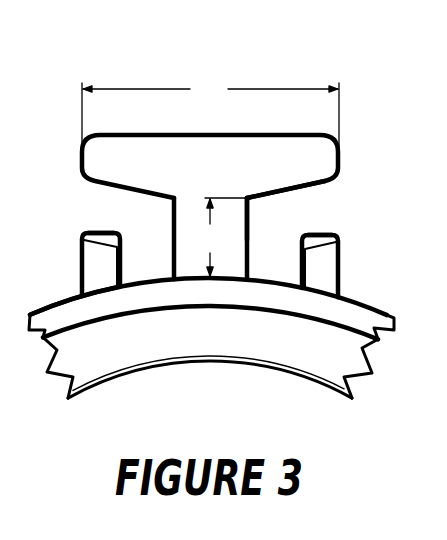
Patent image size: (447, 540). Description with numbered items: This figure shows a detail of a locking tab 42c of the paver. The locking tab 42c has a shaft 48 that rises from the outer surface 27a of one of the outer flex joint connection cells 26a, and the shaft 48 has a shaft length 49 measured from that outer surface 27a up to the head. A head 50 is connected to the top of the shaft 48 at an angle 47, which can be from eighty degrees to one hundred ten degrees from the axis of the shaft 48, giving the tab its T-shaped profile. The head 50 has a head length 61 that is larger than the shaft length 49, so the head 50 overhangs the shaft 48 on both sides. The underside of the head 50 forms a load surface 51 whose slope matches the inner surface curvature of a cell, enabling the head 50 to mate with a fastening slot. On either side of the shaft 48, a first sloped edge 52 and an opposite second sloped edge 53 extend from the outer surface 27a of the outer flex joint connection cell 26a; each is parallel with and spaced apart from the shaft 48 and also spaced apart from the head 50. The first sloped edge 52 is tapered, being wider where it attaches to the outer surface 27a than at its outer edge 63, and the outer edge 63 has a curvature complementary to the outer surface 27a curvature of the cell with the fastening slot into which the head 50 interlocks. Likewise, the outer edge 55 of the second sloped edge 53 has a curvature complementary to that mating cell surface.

The locking tab 42c is at (192, 140).
The head length 61 is at (210, 113).
The head 50 is at (259, 135).
The shaft 48 is at (172, 262).
The shaft length 49 is at (221, 237).
The angle 47 is at (280, 199).
The load surface 51 is at (300, 200).
The first sloped edge 52 is at (84, 233).
The outer edge 63 is at (105, 225).
The second sloped edge 53 is at (336, 234).
The outer edge 55 is at (318, 223).
The outer surface 27a is at (60, 298).
The outer flex joint connection cell 26a is at (381, 288).